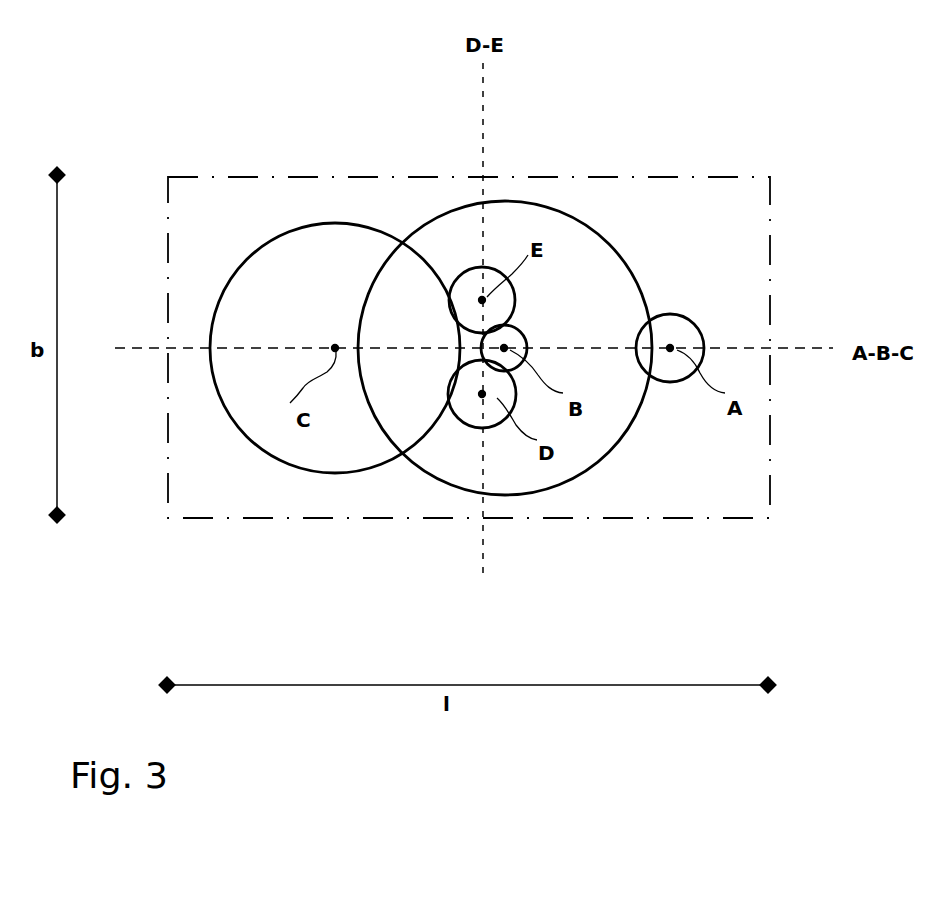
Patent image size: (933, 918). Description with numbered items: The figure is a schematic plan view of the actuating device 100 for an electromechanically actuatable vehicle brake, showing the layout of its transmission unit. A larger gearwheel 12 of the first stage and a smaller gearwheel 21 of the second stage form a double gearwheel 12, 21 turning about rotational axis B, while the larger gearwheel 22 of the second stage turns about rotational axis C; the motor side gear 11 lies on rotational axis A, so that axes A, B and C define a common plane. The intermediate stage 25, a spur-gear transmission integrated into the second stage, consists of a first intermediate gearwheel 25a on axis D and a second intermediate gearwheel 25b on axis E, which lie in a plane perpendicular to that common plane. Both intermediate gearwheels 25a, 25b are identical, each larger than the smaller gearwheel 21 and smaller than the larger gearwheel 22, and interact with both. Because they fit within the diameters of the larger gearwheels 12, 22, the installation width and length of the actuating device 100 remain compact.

The actuating device 100 is at (769, 519).
The larger gearwheel of the second stage 22 is at (269, 240).
The larger gearwheel of the first stage 12 is at (562, 210).
The first pinion 11 is at (670, 313).
The smaller gearwheel of the second stage 21 is at (525, 333).
The intermediate stage 25 is at (425, 341).
The first intermediate gearwheel 25a is at (457, 420).
The second intermediate gearwheel 25b is at (457, 281).